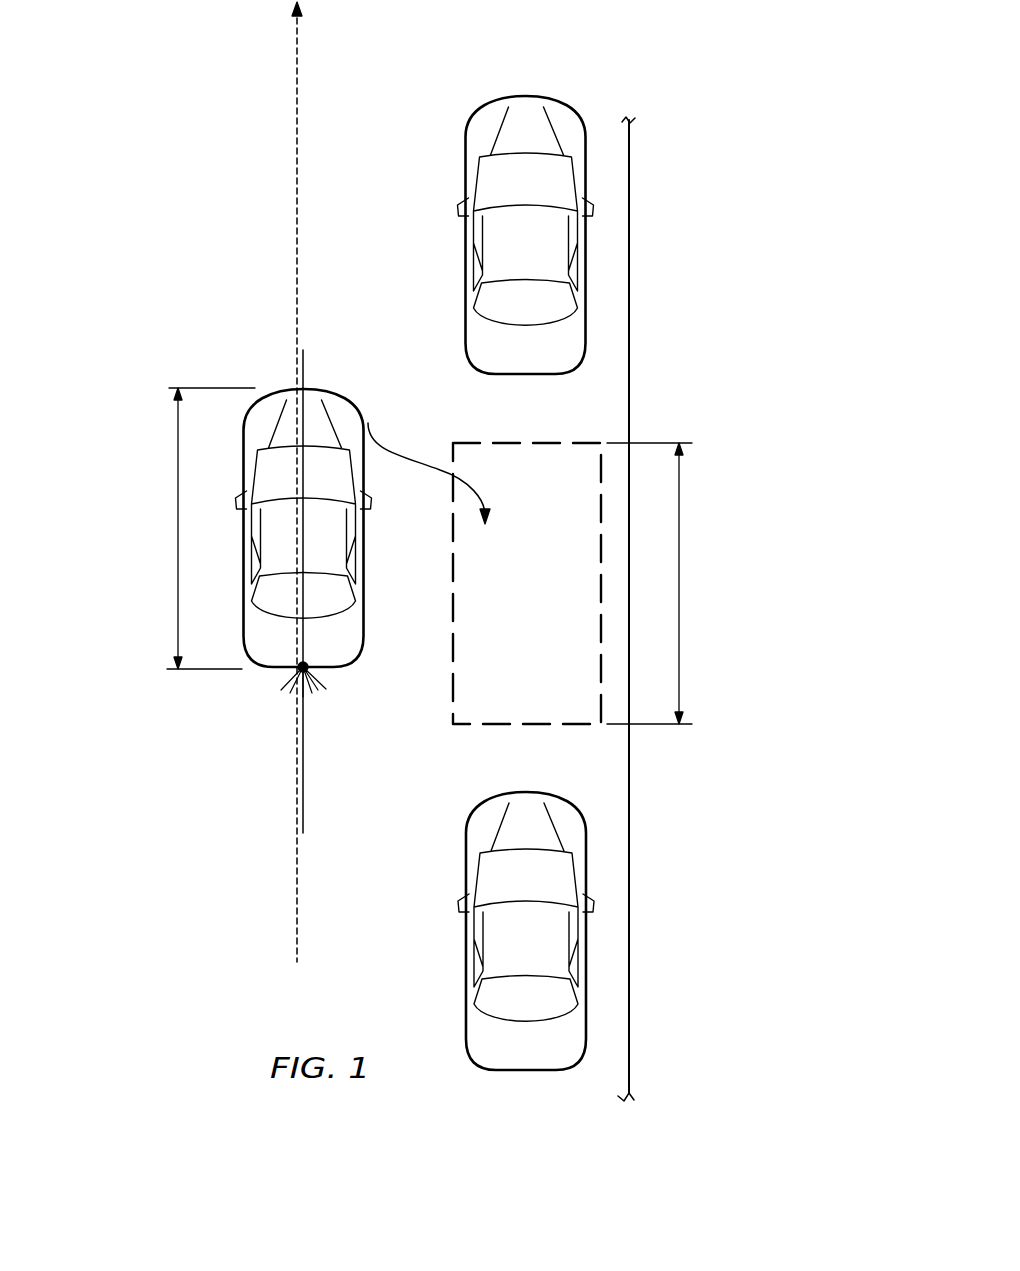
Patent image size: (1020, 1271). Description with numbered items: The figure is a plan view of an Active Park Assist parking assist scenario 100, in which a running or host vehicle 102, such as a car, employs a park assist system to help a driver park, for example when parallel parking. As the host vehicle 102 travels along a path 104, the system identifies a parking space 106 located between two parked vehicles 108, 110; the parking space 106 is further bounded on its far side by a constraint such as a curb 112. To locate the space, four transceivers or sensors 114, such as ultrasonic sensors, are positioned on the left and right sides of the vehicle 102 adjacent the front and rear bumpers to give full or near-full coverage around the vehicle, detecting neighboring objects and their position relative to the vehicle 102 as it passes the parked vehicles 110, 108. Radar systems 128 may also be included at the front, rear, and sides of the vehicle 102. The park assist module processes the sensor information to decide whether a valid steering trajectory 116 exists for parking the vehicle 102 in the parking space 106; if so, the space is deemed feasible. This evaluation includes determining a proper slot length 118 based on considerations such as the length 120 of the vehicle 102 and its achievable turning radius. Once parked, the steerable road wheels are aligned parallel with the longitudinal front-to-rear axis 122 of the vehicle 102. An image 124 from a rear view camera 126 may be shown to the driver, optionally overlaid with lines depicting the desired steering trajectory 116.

The parking assist scenario 100 is at (137, 76).
The host vehicle 102 is at (246, 498).
The path 104 is at (298, 833).
The parking space 106 is at (452, 716).
The parked vehicle 108 is at (584, 116).
The parked vehicle 110 is at (585, 832).
The curb 112 is at (631, 943).
The sensors 114 is at (256, 402).
The steering trajectory 116 is at (474, 486).
The slot length 118 is at (680, 547).
The vehicle length 120 is at (178, 514).
The longitudinal axis 122 is at (306, 540).
The image 124 is at (283, 683).
The rear view camera 126 is at (303, 667).
The radar systems 128 is at (306, 388).